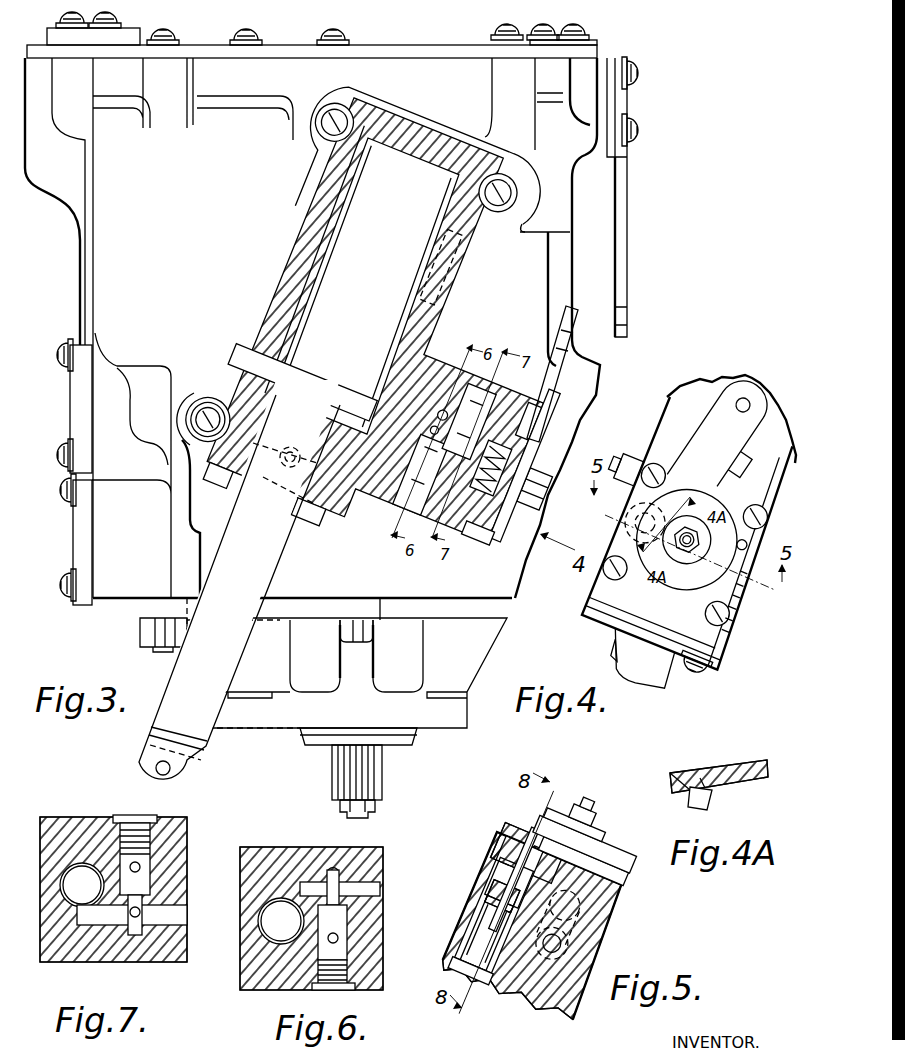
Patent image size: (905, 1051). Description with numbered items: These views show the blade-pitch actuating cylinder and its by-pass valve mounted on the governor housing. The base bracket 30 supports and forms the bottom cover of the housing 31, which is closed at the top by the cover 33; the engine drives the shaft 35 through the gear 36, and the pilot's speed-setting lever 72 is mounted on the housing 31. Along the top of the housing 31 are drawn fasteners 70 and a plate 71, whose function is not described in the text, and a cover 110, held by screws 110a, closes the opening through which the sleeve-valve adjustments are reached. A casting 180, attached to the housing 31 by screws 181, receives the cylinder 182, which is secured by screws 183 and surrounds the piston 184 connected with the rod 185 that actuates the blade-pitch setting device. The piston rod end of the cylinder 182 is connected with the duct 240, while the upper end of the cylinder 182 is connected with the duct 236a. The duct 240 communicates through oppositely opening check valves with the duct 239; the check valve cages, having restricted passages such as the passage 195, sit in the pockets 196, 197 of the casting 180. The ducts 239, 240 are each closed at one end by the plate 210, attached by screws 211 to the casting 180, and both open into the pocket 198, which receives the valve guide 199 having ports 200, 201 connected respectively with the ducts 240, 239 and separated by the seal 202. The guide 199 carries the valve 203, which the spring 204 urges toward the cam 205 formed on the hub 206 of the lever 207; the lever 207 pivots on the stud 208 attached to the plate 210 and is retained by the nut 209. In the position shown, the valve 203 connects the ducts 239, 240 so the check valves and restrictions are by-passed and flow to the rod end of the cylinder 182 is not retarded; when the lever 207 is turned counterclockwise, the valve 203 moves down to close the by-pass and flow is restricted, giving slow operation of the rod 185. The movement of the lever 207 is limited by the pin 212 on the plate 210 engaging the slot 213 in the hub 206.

In FIG. 3, the base bracket 30 is at (455, 724).
In FIG. 3, the housing 31 is at (107, 283).
In FIG. 3, the cover 33 is at (460, 44).
In FIG. 3, the shaft 35 is at (372, 815).
In FIG. 3, the gear 36 is at (383, 780).
In FIG. 3, the cap screws 70 is at (117, 24).
In FIG. 3, the cover plate 71 is at (47, 36).
In FIG. 3, the lever 72 is at (628, 216).
In FIG. 3, the cover 110 is at (80, 545).
In FIG. 3, the screws 110a is at (68, 602).
In FIG. 3, the casting 180 is at (312, 210).
In FIG. 4, the casting 180 is at (712, 650).
In FIG. 5, the casting 180 is at (610, 927).
In FIG. 7, the casting 180 is at (48, 820).
In FIG. 6, the casting 180 is at (239, 982).
In FIG. 3, the screws 181 is at (502, 190).
In FIG. 3, the cylinder 182 is at (292, 290).
In FIG. 3, the screws 183 is at (313, 520).
In FIG. 3, the piston 184 is at (308, 382).
In FIG. 3, the rod 185 is at (244, 514).
In FIG. 3, the restricted passage 195 is at (502, 468).
In FIG. 6, the pocket 196 is at (342, 920).
In FIG. 7, the pocket 197 is at (143, 880).
In FIG. 5, the pocket 198 is at (467, 947).
In FIG. 7, the pocket 198 is at (77, 877).
In FIG. 6, the pocket 198 is at (277, 900).
In FIG. 5, the valve guide 199 is at (507, 840).
In FIG. 5, the port 200 is at (473, 903).
In FIG. 5, the port 201 is at (498, 868).
In FIG. 5, the seal 202 is at (487, 893).
In FIG. 4A, the valve 203 is at (700, 787).
In FIG. 5, the valve 203 is at (532, 843).
In FIG. 5, the spring 204 is at (493, 983).
In FIG. 4, the cam 205 is at (648, 521).
In FIG. 4A, the cam 205 is at (713, 790).
In FIG. 3, the hub 206 is at (534, 438).
In FIG. 4, the hub 206 is at (642, 598).
In FIG. 4A, the hub 206 is at (760, 767).
In FIG. 5, the hub 206 is at (565, 817).
In FIG. 3, the lever 207 is at (560, 358).
In FIG. 4, the lever 207 is at (740, 458).
In FIG. 4, the stud 208 is at (692, 560).
In FIG. 5, the stud 208 is at (583, 810).
In FIG. 4, the nut 209 is at (743, 587).
In FIG. 5, the nut 209 is at (595, 826).
In FIG. 3, the plate 210 is at (482, 520).
In FIG. 4, the plate 210 is at (738, 602).
In FIG. 5, the plate 210 is at (620, 887).
In FIG. 3, the screws 211 is at (533, 423).
In FIG. 4, the screws 211 is at (727, 623).
In FIG. 5, the screws 211 is at (627, 873).
In FIG. 4, the pin 212 is at (767, 520).
In FIG. 4, the slot 213 is at (743, 547).
In FIG. 3, the duct 236a is at (467, 247).
In FIG. 3, the duct 239 is at (445, 410).
In FIG. 7, the duct 239 is at (140, 866).
In FIG. 6, the duct 239 is at (333, 868).
In FIG. 3, the duct 240 is at (340, 432).
In FIG. 5, the duct 240 is at (603, 945).
In FIG. 7, the duct 240 is at (140, 912).
In FIG. 6, the duct 240 is at (338, 940).